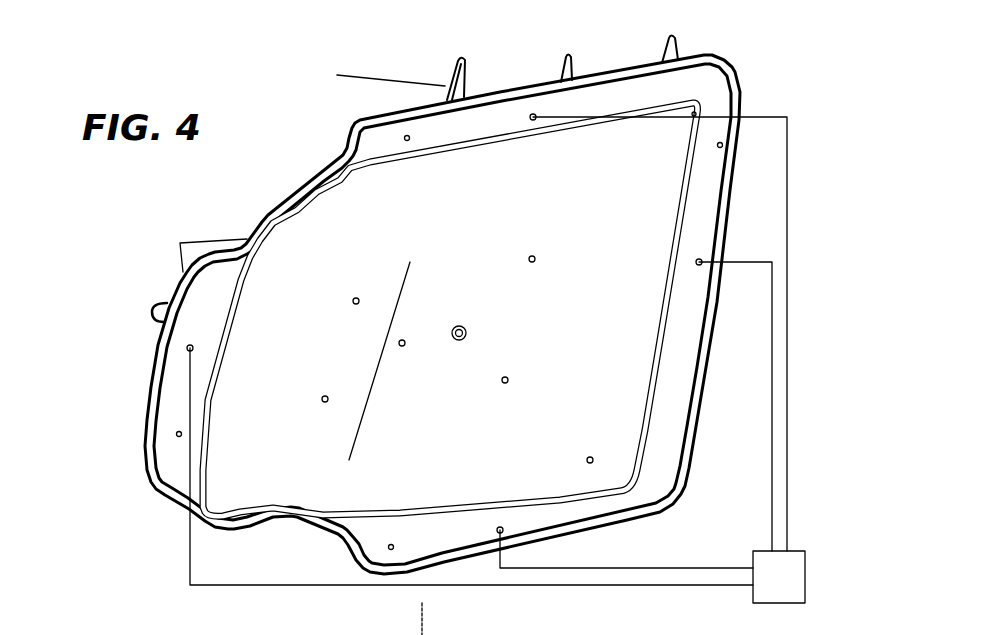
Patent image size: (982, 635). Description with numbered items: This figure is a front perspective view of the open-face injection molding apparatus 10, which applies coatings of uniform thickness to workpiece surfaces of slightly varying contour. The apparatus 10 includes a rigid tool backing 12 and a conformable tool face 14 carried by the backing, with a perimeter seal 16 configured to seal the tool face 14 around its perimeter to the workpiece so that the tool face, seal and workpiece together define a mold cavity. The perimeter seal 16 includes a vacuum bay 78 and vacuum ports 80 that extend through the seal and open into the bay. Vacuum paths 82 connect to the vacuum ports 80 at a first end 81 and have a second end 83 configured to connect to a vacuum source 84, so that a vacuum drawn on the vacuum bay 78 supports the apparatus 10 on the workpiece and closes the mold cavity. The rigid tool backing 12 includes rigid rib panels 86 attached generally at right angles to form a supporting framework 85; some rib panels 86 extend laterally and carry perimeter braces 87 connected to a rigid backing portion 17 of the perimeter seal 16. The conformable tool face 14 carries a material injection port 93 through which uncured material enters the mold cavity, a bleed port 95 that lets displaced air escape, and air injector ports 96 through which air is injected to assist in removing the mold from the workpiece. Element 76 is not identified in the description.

The open-face injection molding apparatus 10 is at (797, 91).
The rigid tool backing 12 is at (467, 57).
The conformable tool face 14 is at (518, 79).
The perimeter seal 16 is at (398, 287).
The rigid backing portion 17 is at (398, 287).
The vacuum bay 78 is at (703, 78).
The centerline 76 is at (381, 619).
The vacuum ports 80 is at (378, 287).
The first end 81 is at (533, 117).
The vacuum paths 82 is at (772, 474).
The second end 83 is at (753, 585).
The vacuum source 84 is at (779, 577).
The supporting framework 85 is at (180, 243).
The rigid rib panels 86 is at (334, 154).
The perimeter braces 87 is at (224, 243).
The material injection port 93 is at (590, 460).
The bleed port 95 is at (693, 115).
The air injector ports 96 is at (325, 399).